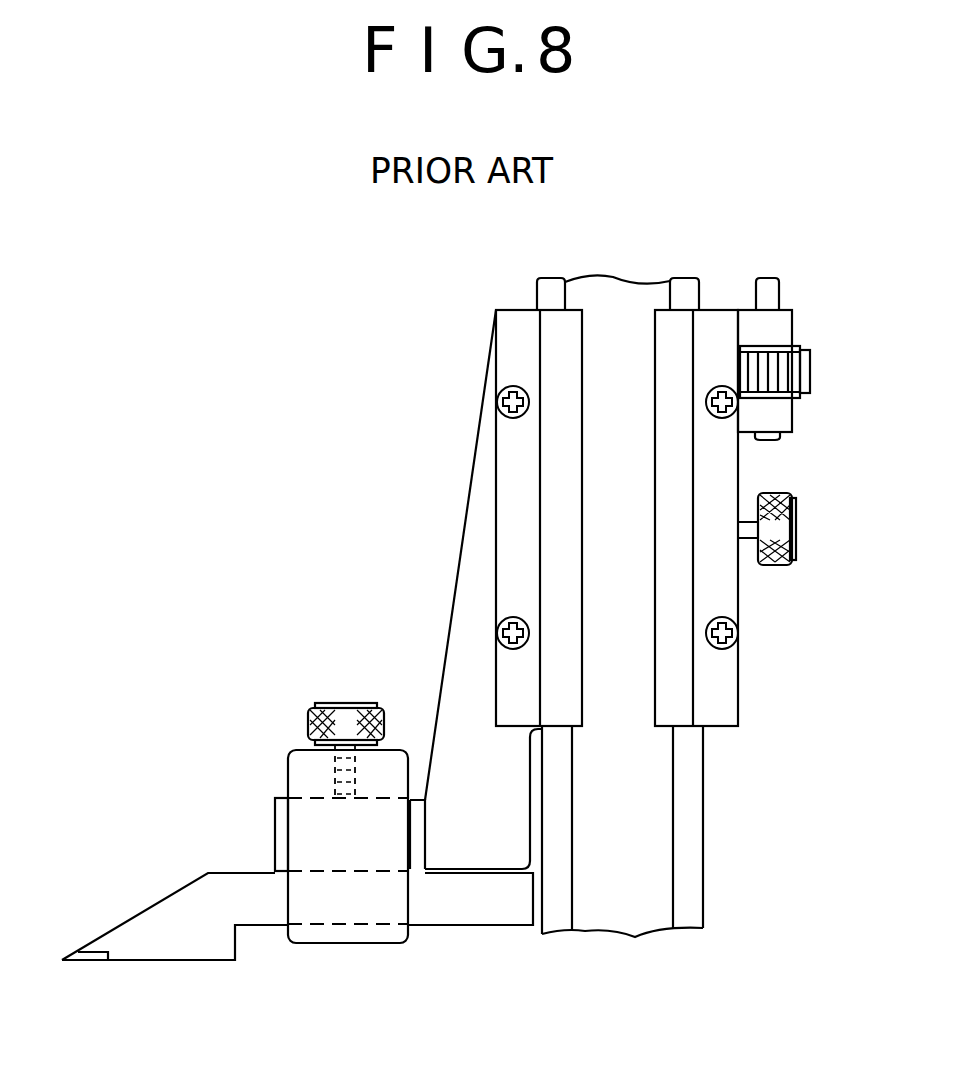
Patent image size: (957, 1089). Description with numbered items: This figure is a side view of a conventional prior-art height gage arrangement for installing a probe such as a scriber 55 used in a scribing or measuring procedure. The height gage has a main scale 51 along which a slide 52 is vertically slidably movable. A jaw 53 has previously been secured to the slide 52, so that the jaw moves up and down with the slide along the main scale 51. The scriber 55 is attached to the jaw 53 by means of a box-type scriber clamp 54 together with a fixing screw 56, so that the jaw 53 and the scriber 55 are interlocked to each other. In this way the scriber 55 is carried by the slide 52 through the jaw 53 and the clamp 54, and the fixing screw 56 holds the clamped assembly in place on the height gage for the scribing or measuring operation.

The main scale 51 is at (692, 817).
The slide 52 is at (727, 673).
The jaw 53 is at (280, 833).
The box-type scriber clamp 54 is at (295, 767).
The scriber 55 is at (203, 942).
The fixing screw 56 is at (343, 718).